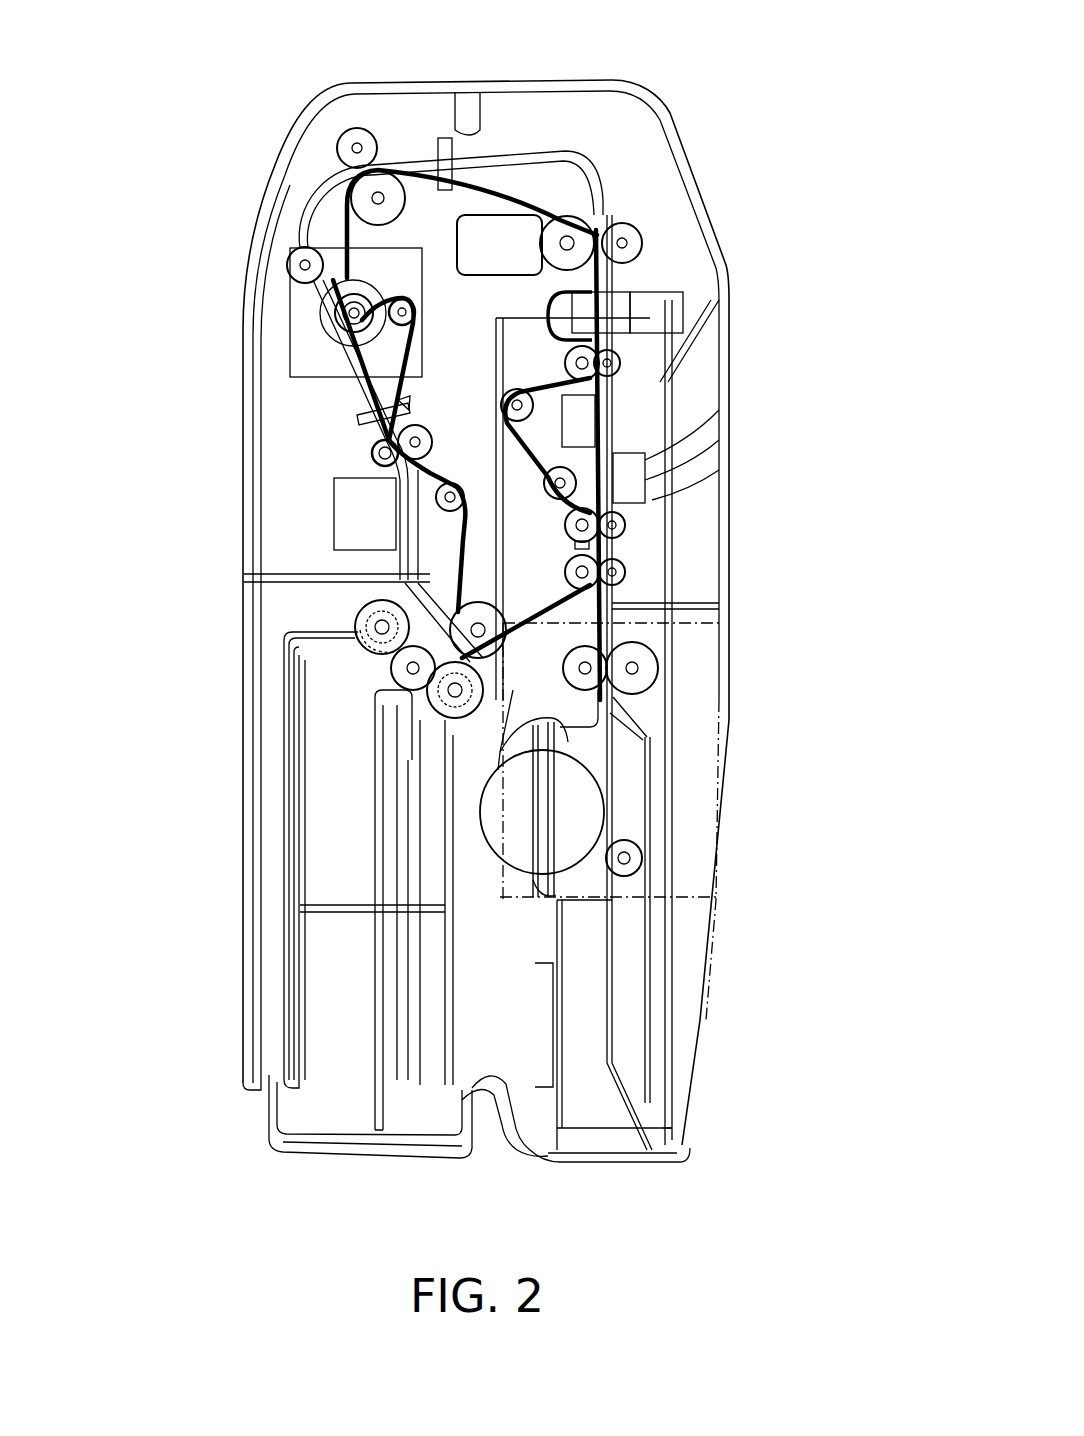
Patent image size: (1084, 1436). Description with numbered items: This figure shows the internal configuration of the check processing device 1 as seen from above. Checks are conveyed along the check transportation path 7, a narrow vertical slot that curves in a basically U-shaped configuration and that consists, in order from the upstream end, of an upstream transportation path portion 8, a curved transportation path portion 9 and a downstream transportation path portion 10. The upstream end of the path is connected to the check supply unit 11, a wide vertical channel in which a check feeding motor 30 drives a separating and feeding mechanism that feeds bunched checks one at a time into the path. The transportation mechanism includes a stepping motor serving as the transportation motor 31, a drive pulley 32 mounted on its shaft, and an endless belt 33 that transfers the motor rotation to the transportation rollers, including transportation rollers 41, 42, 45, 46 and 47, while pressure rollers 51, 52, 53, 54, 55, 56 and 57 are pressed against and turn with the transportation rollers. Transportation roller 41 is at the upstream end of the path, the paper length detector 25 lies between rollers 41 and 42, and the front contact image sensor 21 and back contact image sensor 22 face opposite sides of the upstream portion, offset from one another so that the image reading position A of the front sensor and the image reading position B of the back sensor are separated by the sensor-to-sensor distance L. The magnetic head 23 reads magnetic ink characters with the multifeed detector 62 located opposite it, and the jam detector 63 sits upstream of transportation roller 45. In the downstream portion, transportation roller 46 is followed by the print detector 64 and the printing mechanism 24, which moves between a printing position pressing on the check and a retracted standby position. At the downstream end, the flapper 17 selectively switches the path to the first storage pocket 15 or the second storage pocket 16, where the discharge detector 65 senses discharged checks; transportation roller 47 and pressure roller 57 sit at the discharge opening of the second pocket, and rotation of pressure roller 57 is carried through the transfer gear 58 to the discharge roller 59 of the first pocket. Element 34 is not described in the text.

The check processing device 1 is at (784, 224).
The check transportation path 7 is at (550, 156).
The upstream transportation path portion 8 is at (610, 382).
The curved transportation path portion 9 is at (484, 126).
The downstream transportation path portion 10 is at (385, 405).
The check supply unit 11 is at (587, 990).
The first storage pocket 15 is at (332, 1004).
The second storage pocket 16 is at (434, 1040).
The flapper 17 is at (363, 574).
The front contact image sensor 21 is at (648, 488).
The back contact image sensor 22 is at (602, 406).
The magnetic head 23 is at (684, 298).
The printing mechanism 24 is at (335, 492).
The paper length detector 25 is at (606, 548).
The check feeding motor 30 is at (606, 805).
The transportation motor 31 is at (322, 322).
The drive pulley 32 is at (345, 318).
The endless belt 33 is at (298, 252).
The tension roller 34 is at (560, 262).
The transportation roller 41 is at (632, 566).
The transportation roller 42 is at (628, 528).
The transportation roller 45 is at (372, 194).
The transportation roller 46 is at (398, 442).
The transportation roller 47 is at (472, 600).
The pressure roller 51 is at (635, 575).
The pressure roller 52 is at (633, 497).
The pressure roller 53 is at (602, 348).
The pressure roller 54 is at (628, 225).
The pressure roller 55 is at (341, 128).
The pressure roller 56 is at (370, 453).
The pressure roller 57 is at (430, 715).
The transfer gear 58 is at (395, 665).
The discharge roller 59 is at (360, 633).
The multifeed detector 62 is at (614, 318).
The jam detector 63 is at (447, 137).
The print detector 64 is at (355, 412).
The discharge detector 65 is at (378, 597).
The image reading position A is at (690, 472).
The image reading position B is at (640, 400).
The sensor-to-sensor distance L is at (625, 475).